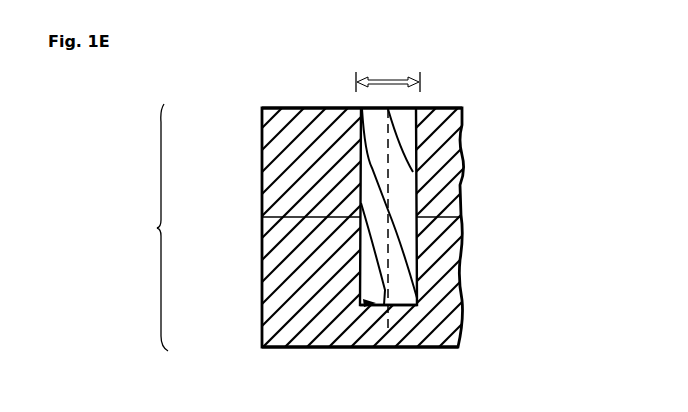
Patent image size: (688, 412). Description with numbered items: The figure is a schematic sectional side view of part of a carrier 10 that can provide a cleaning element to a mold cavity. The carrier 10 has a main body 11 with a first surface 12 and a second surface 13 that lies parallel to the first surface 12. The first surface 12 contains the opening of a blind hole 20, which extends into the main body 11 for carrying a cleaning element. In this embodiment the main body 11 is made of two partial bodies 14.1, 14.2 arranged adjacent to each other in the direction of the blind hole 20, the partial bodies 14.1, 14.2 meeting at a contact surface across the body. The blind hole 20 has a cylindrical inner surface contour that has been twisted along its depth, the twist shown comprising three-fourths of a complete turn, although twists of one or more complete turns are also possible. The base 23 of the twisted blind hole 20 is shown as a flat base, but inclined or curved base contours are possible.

The carrier 10 is at (365, 219).
The main body 11 is at (365, 222).
The first surface 12 is at (447, 103).
The second surface 13 is at (402, 350).
The partial body 14.1 is at (290, 184).
The partial body 14.2 is at (437, 300).
The blind hole 20 is at (370, 226).
The base 23 is at (338, 343).